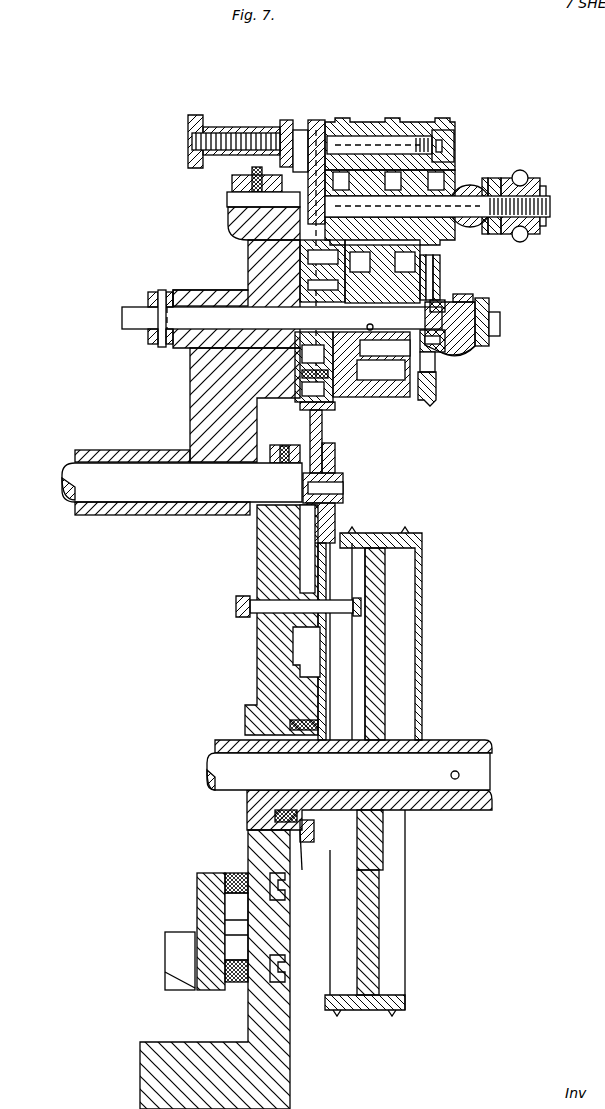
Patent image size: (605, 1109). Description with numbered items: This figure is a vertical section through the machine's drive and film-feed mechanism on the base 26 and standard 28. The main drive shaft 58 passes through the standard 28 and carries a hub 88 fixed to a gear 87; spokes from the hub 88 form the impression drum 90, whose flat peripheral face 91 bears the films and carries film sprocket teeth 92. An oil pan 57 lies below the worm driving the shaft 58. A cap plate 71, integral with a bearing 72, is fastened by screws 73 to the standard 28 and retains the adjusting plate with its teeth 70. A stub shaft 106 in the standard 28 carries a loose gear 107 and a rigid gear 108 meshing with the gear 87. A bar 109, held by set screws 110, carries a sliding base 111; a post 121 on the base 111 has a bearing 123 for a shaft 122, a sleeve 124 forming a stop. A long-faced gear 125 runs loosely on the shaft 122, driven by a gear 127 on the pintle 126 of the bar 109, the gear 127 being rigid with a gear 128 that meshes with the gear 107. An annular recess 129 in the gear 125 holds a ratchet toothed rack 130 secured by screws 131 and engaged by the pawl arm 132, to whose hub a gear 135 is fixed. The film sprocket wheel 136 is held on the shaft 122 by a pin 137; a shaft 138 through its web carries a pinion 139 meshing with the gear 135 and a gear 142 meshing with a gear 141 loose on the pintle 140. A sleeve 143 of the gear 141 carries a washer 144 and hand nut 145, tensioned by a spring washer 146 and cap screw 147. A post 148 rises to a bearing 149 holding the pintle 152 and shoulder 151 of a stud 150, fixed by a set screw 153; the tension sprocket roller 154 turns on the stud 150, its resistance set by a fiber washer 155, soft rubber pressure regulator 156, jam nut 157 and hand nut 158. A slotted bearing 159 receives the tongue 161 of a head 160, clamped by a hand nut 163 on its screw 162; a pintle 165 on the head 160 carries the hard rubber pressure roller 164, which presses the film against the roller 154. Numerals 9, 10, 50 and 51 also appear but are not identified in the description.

The drive assembly 9 is at (456, 119).
The section line 10 is at (316, 213).
The base 26 is at (141, 1073).
The standard 28 is at (258, 688).
The bearing block 50 is at (197, 903).
The bearing rollers 51 is at (246, 874).
The oil pan 57 is at (167, 984).
The main drive shaft 58 is at (490, 770).
The teeth 70 is at (301, 852).
The cap plate 71 is at (308, 840).
The bearing 72 is at (305, 720).
The screws 73 is at (273, 814).
The gear 87 is at (350, 876).
The hub 88 is at (428, 742).
The impression drum 90 is at (418, 548).
The flat peripheral face 91 is at (406, 532).
The film sprocket teeth 92 is at (354, 532).
The stub shaft 106 is at (268, 612).
The gear 107 is at (318, 660).
The gear 108 is at (386, 576).
The bar 109 is at (70, 480).
The set screws 110 is at (281, 445).
The base 111 is at (106, 515).
The post 121 is at (190, 378).
The shaft 122 is at (124, 317).
The bearing 123 is at (186, 290).
The sleeve 124 is at (149, 338).
The gear 125 is at (326, 408).
The pintle 126 is at (331, 489).
The gear 127 is at (323, 433).
The gear 128 is at (336, 451).
The annular recess 129 is at (348, 404).
The ratchet toothed rack 130 is at (336, 262).
The screws 131 is at (304, 375).
The pawl arm 132 is at (402, 260).
The gear 135 is at (440, 264).
The film sprocket wheel 136 is at (432, 278).
The pin 137 is at (428, 292).
The shaft 138 is at (424, 362).
The pinion 139 is at (410, 370).
The pintle 140 is at (437, 306).
The gear 141 is at (422, 342).
The gear 142 is at (424, 384).
The sleeve 143 is at (470, 352).
The washer 144 is at (455, 358).
The hand nut 145 is at (472, 299).
The spring washer 146 is at (486, 311).
The cap screw 147 is at (499, 323).
The post 148 is at (250, 244).
The bearing 149 is at (232, 227).
The stud 150 is at (552, 209).
The shoulder 151 is at (316, 128).
The pintle 152 is at (236, 200).
The set screw 153 is at (240, 181).
The tension sprocket roller 154 is at (466, 185).
The fiber washer 155 is at (484, 180).
The soft rubber pressure regulator 156 is at (495, 180).
The jam nut 157 is at (528, 180).
The hand nut 158 is at (543, 194).
The slotted bearing 159 is at (294, 128).
The head 160 is at (340, 125).
The tongue 161 is at (286, 130).
The screw 162 is at (238, 134).
The hand nut 163 is at (188, 123).
The hard rubber pressure roller 164 is at (382, 142).
The pintle 165 is at (441, 136).